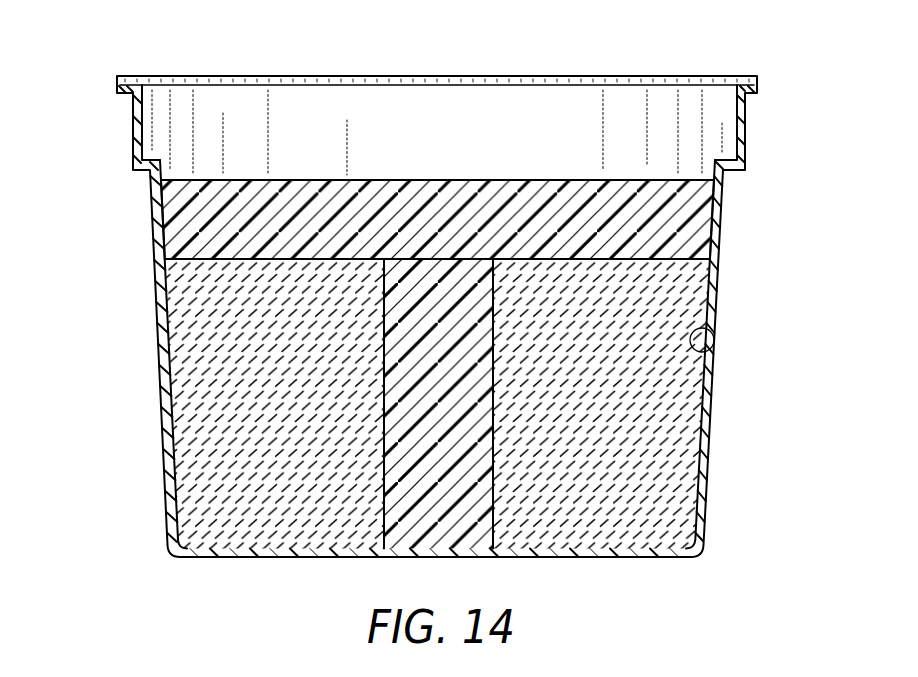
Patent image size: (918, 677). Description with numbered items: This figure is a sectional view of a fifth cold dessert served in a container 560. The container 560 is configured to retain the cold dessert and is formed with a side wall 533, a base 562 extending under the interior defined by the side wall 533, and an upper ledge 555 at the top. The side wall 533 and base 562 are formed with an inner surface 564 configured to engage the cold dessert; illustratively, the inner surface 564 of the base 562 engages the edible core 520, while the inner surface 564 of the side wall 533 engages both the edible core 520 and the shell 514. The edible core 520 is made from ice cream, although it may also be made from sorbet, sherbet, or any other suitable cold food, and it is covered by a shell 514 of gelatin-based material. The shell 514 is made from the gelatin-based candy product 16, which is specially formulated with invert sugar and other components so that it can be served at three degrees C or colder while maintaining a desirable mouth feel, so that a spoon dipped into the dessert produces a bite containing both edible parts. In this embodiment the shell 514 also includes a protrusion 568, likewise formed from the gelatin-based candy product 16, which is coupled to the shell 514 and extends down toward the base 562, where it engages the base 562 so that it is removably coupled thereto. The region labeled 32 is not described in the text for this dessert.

The shell 514 is at (602, 180).
The upper ledge 555 is at (132, 125).
The container 560 is at (748, 290).
The gelatin-based candy product 16 is at (210, 218).
The inner surface 564 is at (713, 357).
The side wall 533 is at (160, 358).
The edible core 520 is at (205, 457).
The second compartment fill 32 is at (665, 460).
The protrusion 568 is at (380, 445).
The base 562 is at (655, 558).